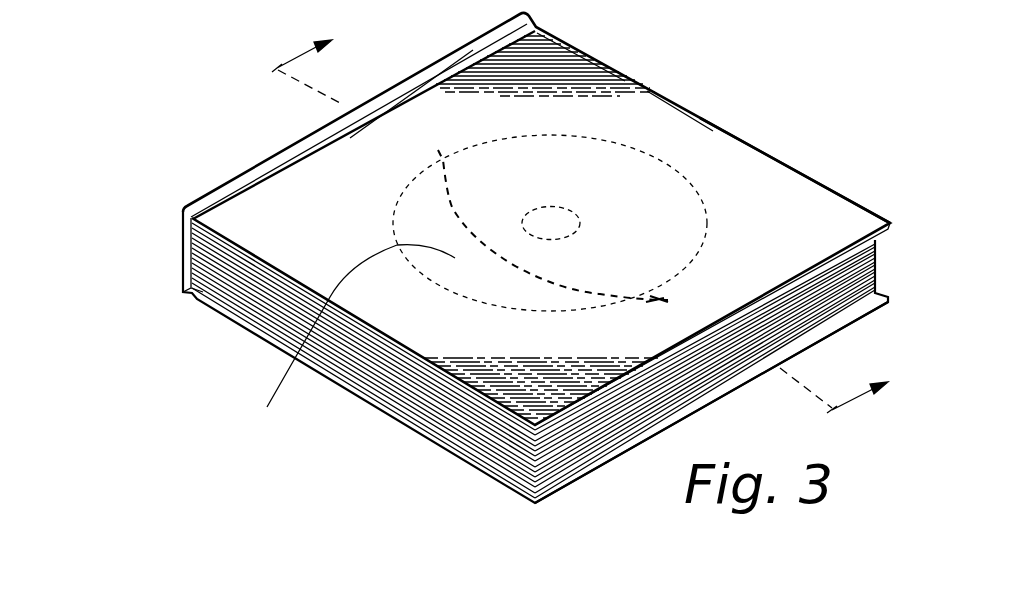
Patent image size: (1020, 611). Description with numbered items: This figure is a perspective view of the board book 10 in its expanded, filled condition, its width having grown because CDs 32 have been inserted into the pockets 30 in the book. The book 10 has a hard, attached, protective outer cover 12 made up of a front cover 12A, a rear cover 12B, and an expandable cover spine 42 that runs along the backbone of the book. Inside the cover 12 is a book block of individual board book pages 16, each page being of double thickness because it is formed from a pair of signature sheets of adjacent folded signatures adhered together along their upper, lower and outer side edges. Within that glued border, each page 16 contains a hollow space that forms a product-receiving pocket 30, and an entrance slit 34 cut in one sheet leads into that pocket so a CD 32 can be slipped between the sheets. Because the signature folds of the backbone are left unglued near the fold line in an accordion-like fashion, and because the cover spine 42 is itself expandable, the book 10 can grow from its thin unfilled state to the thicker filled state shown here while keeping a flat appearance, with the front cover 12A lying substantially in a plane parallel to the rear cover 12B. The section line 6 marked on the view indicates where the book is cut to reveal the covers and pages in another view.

The book 10 is at (232, 176).
The outer cover 12 is at (628, 101).
The front cover 12A is at (792, 173).
The rear cover 12B is at (578, 463).
The board book pages 16 is at (467, 423).
The product-receiving pockets 30 is at (351, 344).
The CDs 32 is at (708, 226).
The entrance slit 34 is at (457, 200).
The expandable cover spine 42 is at (190, 250).
The section line 6- 6 is at (587, 220).